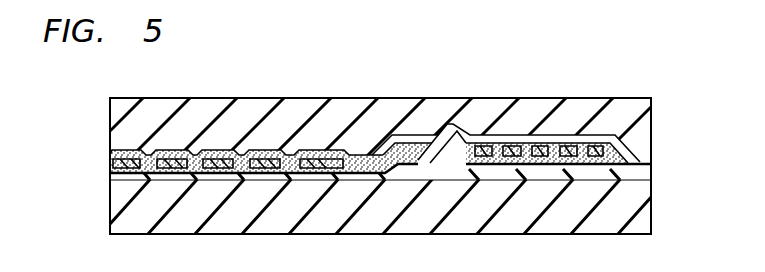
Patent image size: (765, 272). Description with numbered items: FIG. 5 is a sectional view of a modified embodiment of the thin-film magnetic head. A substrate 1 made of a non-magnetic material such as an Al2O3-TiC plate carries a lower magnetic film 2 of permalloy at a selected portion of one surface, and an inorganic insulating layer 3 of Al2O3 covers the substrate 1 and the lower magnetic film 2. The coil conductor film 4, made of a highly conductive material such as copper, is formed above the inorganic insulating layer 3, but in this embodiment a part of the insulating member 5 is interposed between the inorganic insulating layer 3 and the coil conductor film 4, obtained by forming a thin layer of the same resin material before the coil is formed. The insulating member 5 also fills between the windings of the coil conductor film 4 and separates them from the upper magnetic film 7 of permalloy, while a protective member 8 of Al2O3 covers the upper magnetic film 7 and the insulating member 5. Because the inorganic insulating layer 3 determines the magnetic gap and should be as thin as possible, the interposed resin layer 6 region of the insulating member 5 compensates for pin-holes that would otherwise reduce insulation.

The substrate 1 is at (643, 193).
The lower magnetic film 2 is at (643, 174).
The inorganic insulating layer 3 is at (644, 161).
The coil conductor film 4 is at (322, 152).
The insulating member 5 is at (458, 148).
The insulating filler layer 6 is at (369, 158).
The upper magnetic film 7 is at (614, 136).
The protective member 8 is at (589, 112).